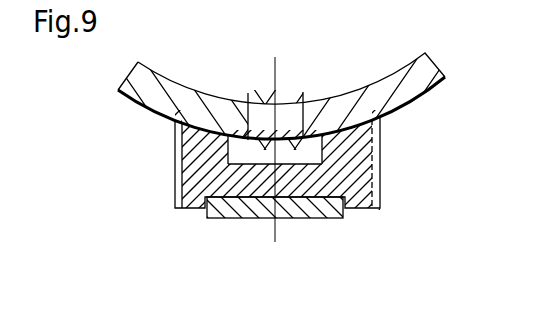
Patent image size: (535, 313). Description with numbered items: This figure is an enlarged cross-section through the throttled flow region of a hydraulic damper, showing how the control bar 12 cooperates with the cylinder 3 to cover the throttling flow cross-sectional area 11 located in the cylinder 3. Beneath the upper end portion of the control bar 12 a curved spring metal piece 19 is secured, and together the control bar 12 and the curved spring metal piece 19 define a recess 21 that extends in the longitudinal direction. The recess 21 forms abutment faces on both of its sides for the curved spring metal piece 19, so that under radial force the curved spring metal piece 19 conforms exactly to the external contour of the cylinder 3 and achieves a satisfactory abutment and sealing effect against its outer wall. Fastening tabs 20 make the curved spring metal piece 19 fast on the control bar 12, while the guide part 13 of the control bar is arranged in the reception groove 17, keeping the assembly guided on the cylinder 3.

The cylinder 3 is at (362, 100).
The throttling flow cross-sectional area 11 is at (267, 113).
The control bar 12 is at (357, 153).
The guide part 13 is at (311, 207).
The reception groove 17 is at (243, 203).
The curved spring metal piece 19 is at (222, 137).
The fastening tabs 20 is at (377, 173).
The recess 21 is at (258, 154).